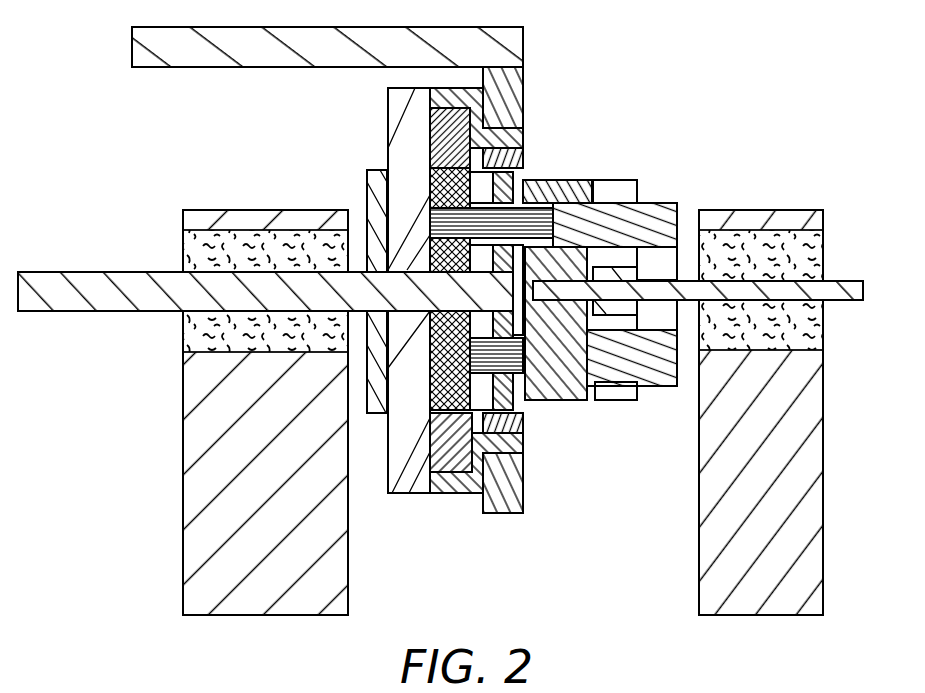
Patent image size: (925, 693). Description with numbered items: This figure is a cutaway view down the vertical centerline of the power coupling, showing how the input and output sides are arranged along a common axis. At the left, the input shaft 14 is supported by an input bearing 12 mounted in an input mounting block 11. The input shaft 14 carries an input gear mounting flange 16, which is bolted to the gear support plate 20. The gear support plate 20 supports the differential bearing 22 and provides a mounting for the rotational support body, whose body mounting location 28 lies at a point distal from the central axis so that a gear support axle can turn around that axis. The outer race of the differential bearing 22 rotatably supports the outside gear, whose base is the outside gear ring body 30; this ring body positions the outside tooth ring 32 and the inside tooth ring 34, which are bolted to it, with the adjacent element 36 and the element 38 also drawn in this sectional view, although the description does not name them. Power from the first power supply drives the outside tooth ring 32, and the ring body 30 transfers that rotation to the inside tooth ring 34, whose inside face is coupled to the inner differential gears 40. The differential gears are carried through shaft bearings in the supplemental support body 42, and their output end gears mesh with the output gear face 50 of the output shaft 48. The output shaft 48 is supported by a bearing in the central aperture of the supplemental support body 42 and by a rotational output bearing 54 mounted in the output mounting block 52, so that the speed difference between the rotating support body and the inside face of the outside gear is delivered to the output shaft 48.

The input mounting block 11 is at (228, 209).
The input bearing 12 is at (183, 250).
The input shaft 14 is at (122, 312).
The input gear mounting flange 16 is at (375, 170).
The gear support plate 20 is at (388, 125).
The differential bearing 22 is at (458, 117).
The third body mounting location 28 is at (503, 377).
The outside gear ring body 30 is at (482, 79).
The outside tooth ring 32 is at (523, 112).
The inside tooth ring 34 is at (525, 155).
The washer 36 is at (513, 178).
The nut 38 is at (608, 386).
The inner differential gears 40 is at (630, 180).
The supplemental support body 42 is at (583, 200).
The output shaft 48 is at (830, 281).
The output gear face 50 is at (641, 278).
The output mounting block 52 is at (765, 210).
The rotational output bearing 54 is at (823, 247).